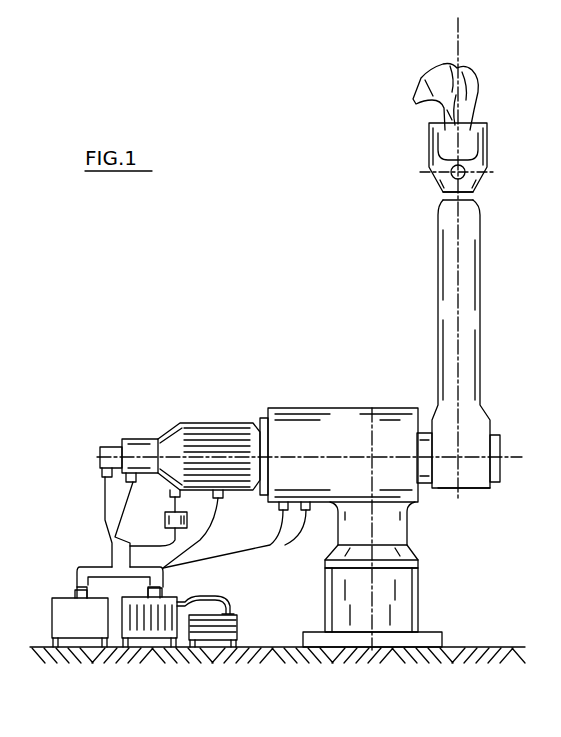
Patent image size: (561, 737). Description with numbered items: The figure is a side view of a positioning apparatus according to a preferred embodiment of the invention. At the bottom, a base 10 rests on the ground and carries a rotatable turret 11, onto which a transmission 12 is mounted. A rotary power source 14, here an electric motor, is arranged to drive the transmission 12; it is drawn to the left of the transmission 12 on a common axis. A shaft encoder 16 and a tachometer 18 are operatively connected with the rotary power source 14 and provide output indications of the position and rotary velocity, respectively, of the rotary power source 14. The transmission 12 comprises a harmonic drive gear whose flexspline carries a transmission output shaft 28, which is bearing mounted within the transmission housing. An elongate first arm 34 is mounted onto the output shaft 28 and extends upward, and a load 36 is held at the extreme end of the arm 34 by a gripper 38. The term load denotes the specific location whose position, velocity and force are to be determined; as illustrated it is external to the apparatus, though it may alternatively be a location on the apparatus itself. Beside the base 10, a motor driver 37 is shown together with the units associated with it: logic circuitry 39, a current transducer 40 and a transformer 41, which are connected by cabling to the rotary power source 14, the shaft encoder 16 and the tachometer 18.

The base 10 is at (420, 607).
The rotatable turret 11 is at (413, 553).
The transmission 12 is at (293, 408).
The rotary power source 14 is at (176, 425).
The shaft encoder 16 is at (131, 439).
The tachometer 18 is at (104, 447).
The transmission output shaft 28 is at (431, 405).
The elongate first arm 34 is at (472, 280).
The load 36 is at (477, 80).
The motor driver 37 is at (160, 635).
The gripper 38 is at (483, 150).
The logic circuitry 39 is at (80, 633).
The current transducer 40 is at (165, 520).
The transformer 41 is at (217, 635).